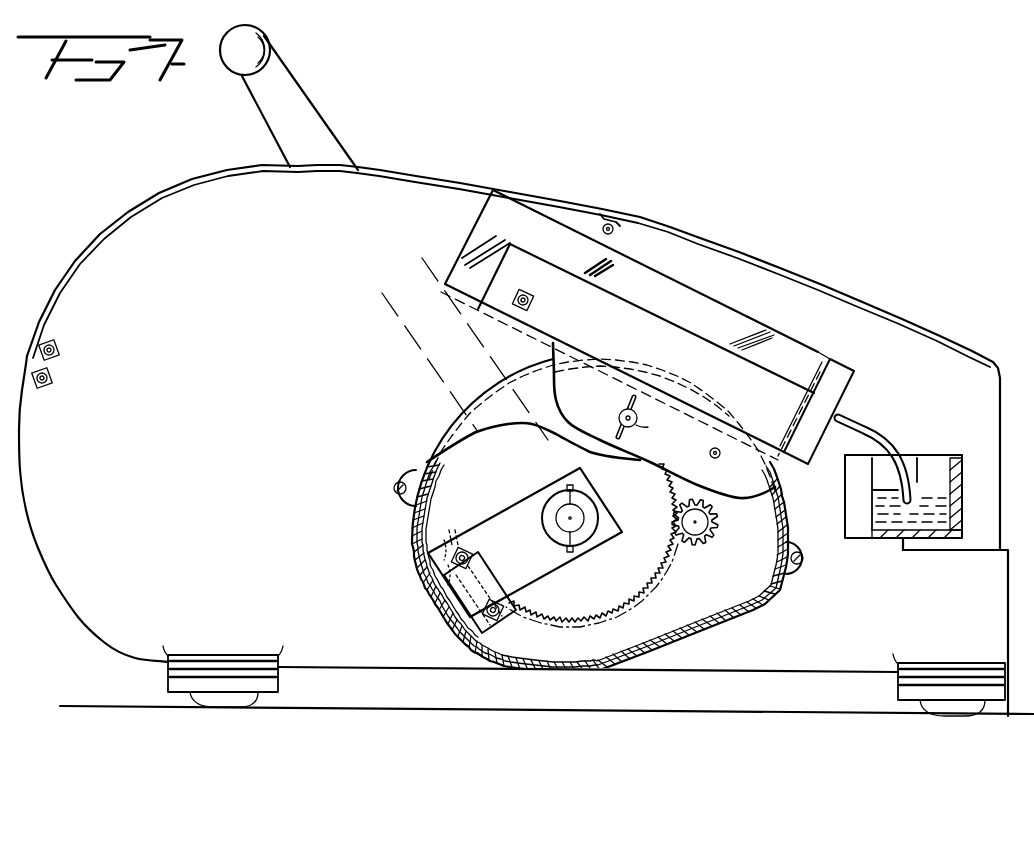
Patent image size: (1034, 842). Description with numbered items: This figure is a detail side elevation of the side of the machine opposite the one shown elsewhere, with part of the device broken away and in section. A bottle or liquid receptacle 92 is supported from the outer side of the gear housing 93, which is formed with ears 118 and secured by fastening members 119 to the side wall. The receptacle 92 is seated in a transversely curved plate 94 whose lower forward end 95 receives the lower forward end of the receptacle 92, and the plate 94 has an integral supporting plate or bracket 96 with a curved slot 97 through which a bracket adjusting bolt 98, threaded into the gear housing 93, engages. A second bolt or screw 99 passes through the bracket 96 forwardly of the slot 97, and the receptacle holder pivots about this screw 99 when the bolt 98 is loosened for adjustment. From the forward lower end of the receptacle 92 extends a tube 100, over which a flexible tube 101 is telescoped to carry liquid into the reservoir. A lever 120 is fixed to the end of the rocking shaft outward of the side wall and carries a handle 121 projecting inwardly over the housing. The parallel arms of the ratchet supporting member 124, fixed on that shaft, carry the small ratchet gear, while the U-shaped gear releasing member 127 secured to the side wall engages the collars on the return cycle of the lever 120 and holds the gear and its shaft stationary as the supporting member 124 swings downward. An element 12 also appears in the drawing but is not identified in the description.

The cutting head housing 12 is at (533, 484).
The liquid receptacle 92 is at (637, 267).
The gear housing 93 is at (490, 413).
The transversely curved plate 94 is at (677, 338).
The lower forward end 95 is at (856, 397).
The supporting plate or bracket 96 is at (553, 353).
The curved slot 97 is at (616, 421).
The bracket adjusting bolt 98 is at (638, 418).
The second bolt or screw 99 is at (710, 451).
The tube 100 is at (859, 417).
The flexible tube 101 is at (903, 443).
The ears 118 is at (805, 568).
The fastening members 119 is at (398, 497).
The lever 120 is at (318, 135).
The handle 121 is at (229, 57).
The ratchet supporting member 124 is at (545, 575).
The U-shaped gear releasing member 127 is at (448, 620).